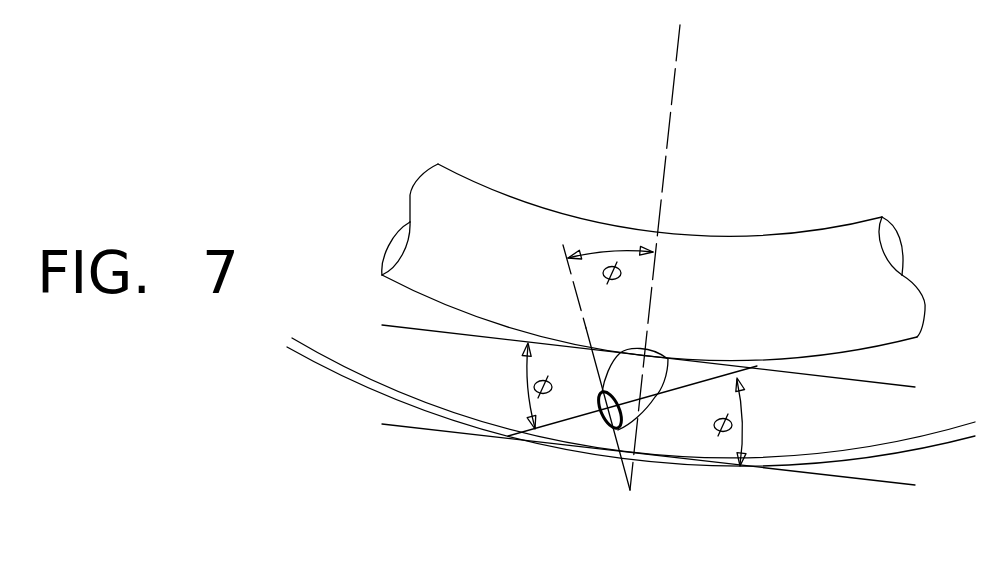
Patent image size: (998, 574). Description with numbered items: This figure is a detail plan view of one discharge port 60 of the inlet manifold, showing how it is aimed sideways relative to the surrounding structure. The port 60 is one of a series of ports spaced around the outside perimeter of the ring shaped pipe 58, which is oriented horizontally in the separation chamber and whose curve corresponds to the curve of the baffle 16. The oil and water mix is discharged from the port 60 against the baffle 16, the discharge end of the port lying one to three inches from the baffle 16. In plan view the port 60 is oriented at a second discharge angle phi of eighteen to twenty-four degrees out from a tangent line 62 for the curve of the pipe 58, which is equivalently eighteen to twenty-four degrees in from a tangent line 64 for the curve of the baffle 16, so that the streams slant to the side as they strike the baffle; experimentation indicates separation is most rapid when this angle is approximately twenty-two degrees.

The discharge port 60 is at (757, 240).
The ring shaped pipe 58 is at (650, 407).
The tangent line for the curve of pipe 62 is at (880, 383).
The baffle 16 is at (810, 455).
The tangent line for the curve of baffle 64 is at (848, 477).